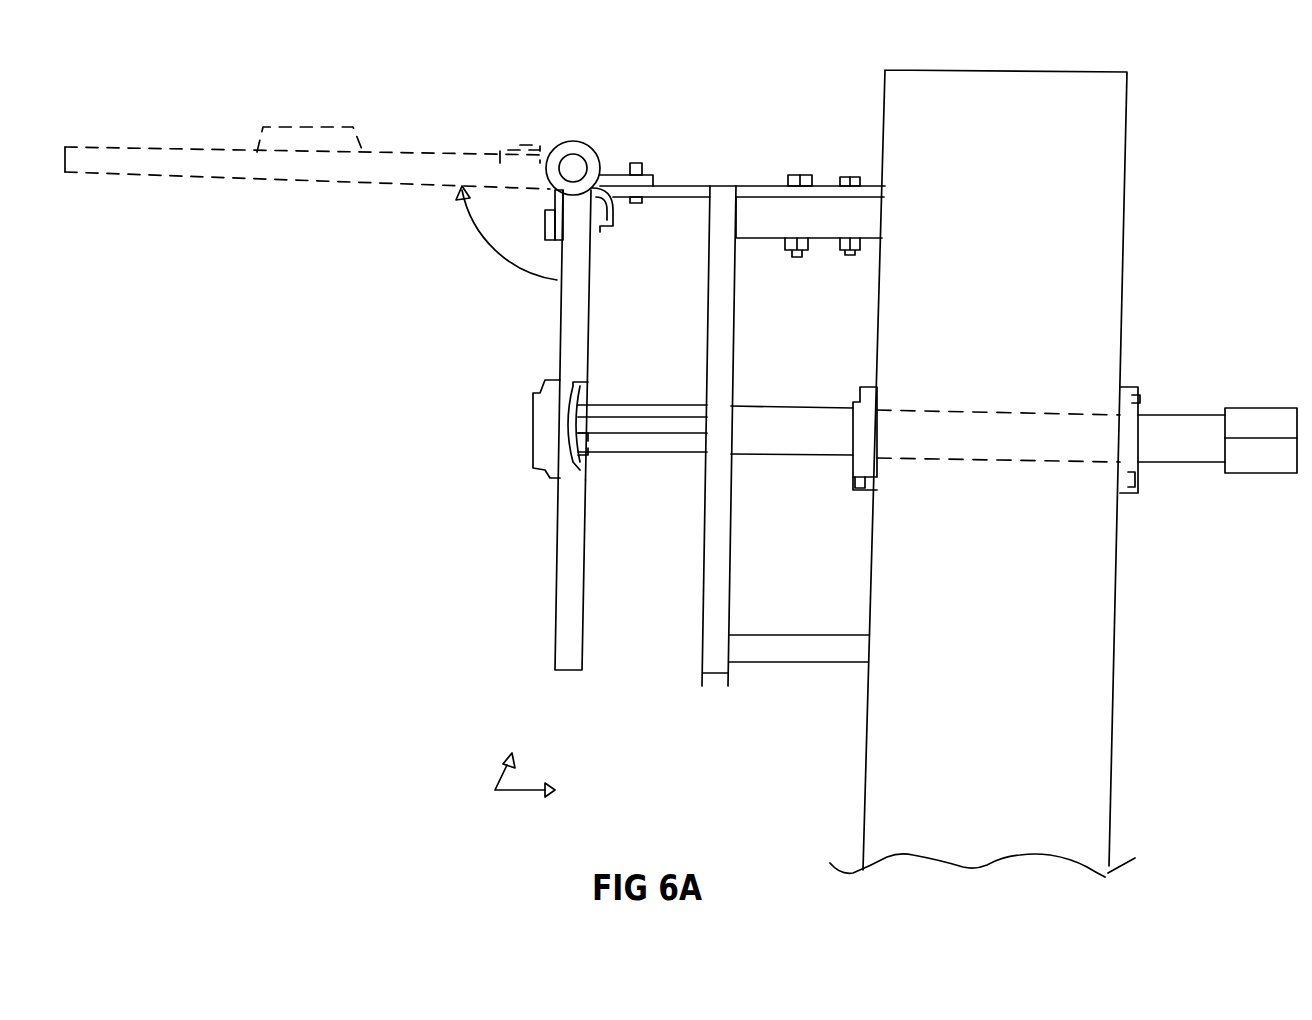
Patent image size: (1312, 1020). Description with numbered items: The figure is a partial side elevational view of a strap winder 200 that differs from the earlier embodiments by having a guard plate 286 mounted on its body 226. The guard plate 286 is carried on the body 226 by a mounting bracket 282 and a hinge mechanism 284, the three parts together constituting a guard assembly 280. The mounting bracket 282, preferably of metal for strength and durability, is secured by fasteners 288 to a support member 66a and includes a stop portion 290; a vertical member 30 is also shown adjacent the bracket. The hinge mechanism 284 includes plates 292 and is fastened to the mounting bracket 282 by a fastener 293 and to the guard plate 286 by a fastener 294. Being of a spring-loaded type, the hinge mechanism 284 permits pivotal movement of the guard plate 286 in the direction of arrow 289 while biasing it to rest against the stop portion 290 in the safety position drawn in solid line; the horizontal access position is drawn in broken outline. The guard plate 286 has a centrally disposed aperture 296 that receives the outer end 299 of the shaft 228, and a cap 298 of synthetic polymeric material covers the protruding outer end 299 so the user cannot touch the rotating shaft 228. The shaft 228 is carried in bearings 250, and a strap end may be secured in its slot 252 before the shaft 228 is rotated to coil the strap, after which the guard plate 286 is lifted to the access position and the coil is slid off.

The body 226 is at (1035, 629).
The vertical bar 30 is at (729, 593).
The mounting bracket 282 is at (706, 173).
The support member 66a is at (852, 223).
The fasteners 288 is at (800, 175).
The hinge mechanism 284 is at (558, 135).
The guard assembly 280 is at (177, 140).
The guard plate 286 is at (556, 548).
The plates 292 is at (612, 172).
The fastener 293 is at (636, 163).
The stop portion 290 is at (604, 226).
The fastener 294 is at (545, 213).
The arrow 289 is at (493, 248).
The aperture 296 is at (578, 406).
The cap 298 is at (533, 432).
The slot 252 is at (626, 453).
The outer end 299 is at (578, 462).
The shaft 228 is at (760, 475).
The bearings 250 is at (852, 386).
The strap winder 200 is at (483, 813).